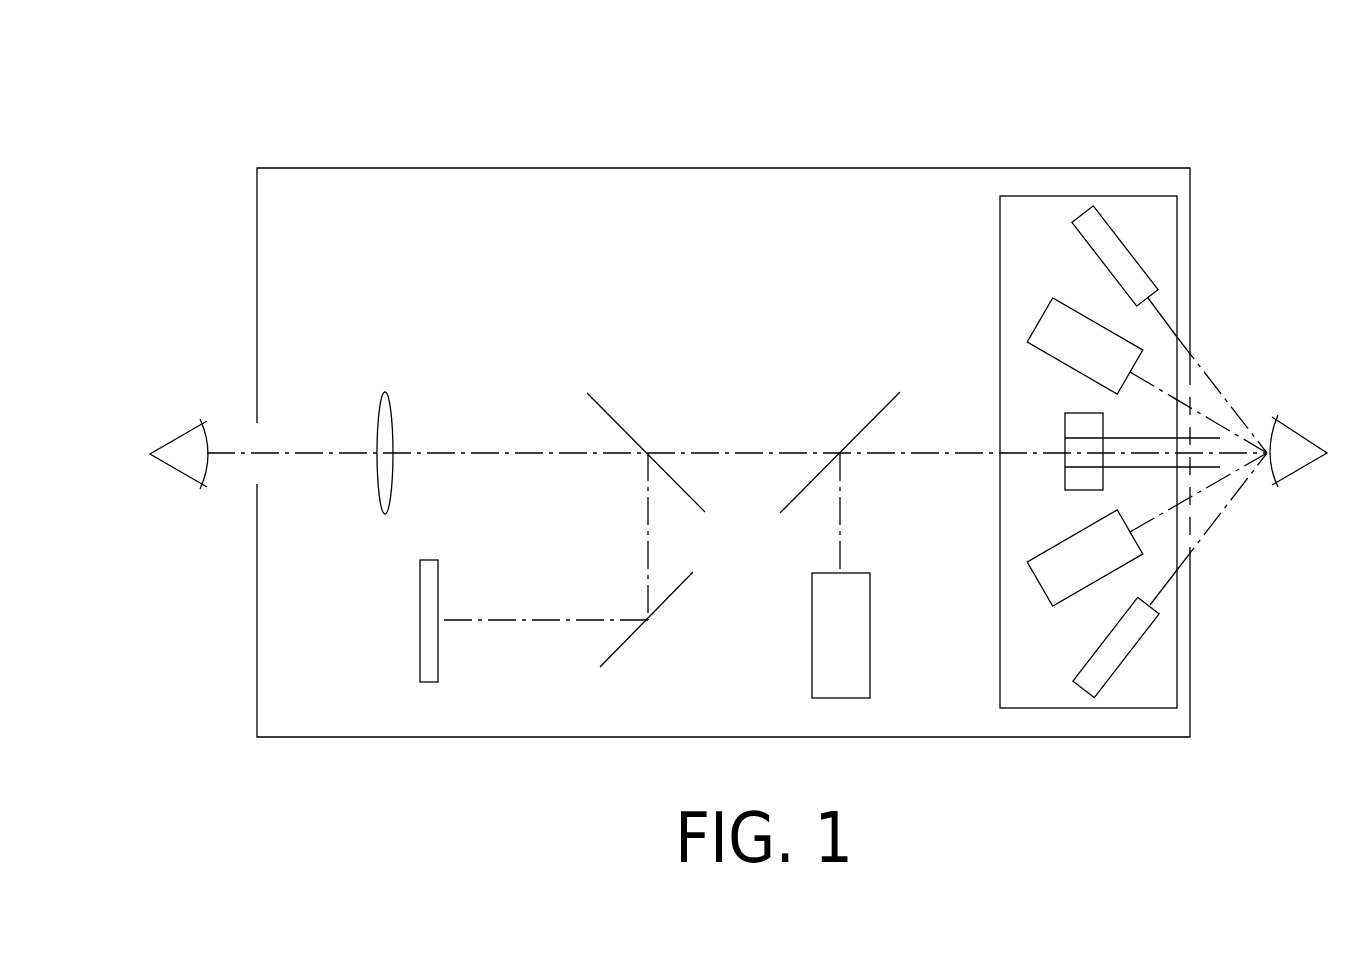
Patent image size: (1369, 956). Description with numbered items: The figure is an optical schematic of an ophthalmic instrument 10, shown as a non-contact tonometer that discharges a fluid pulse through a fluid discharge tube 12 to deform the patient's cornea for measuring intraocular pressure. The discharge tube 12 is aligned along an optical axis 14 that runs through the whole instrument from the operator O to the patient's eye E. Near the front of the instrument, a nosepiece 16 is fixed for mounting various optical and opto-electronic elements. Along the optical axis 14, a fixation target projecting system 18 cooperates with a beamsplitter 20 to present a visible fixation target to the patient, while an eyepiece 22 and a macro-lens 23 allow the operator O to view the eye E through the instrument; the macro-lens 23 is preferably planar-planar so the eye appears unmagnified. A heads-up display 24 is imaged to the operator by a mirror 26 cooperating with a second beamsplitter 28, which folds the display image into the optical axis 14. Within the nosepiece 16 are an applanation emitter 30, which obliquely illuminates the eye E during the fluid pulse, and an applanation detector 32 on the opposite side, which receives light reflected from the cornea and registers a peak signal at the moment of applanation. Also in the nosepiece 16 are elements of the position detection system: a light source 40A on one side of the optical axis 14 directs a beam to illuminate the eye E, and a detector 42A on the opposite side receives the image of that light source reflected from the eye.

The ophthalmic instrument 10 is at (410, 110).
The fluid discharge tube 12 is at (1167, 438).
The optical axis 14 is at (545, 453).
The nosepiece 16 is at (1000, 267).
The fixation target projecting system 18 is at (870, 615).
The beamsplitter 20 is at (878, 413).
The eyepiece 22 is at (389, 407).
The macro-lens 23 is at (1065, 418).
The heads-up display 24 is at (438, 588).
The mirror 26 is at (613, 649).
The beamsplitter 28 is at (686, 495).
The applanation emitter 30 is at (1057, 545).
The applanation detector 32 is at (1035, 317).
The light source 40A is at (1083, 236).
The detector 42A is at (1092, 657).
The operator O is at (167, 470).
The eye E is at (1290, 473).